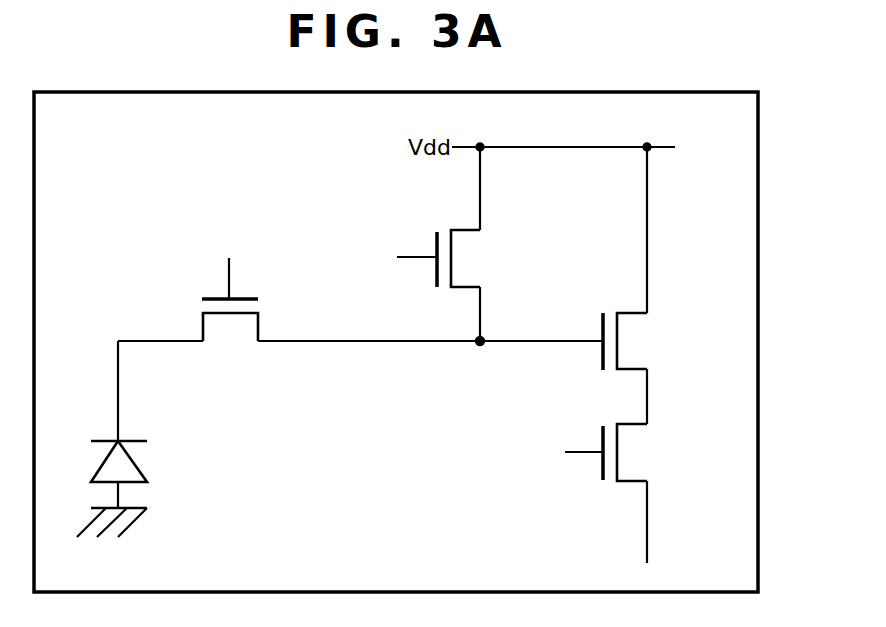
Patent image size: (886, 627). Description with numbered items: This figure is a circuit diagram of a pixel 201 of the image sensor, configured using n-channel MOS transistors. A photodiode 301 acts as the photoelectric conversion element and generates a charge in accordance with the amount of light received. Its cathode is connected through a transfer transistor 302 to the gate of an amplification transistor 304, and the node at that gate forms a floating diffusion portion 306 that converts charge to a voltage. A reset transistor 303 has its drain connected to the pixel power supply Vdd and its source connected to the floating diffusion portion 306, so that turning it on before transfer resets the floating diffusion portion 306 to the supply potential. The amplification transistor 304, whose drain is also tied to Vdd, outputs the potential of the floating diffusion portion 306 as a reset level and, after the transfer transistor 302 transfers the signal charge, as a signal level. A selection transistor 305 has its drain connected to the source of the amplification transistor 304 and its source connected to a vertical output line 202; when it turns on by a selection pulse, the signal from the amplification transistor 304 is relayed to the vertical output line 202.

The pixel 201 is at (759, 192).
The vertical output line 202 is at (648, 507).
The photodiode 301 is at (136, 460).
The transfer transistor 302 is at (232, 332).
The reset transistor 303 is at (475, 256).
The amplification transistor 304 is at (636, 337).
The selection transistor 305 is at (637, 447).
The floating diffusion portion 306 is at (479, 349).